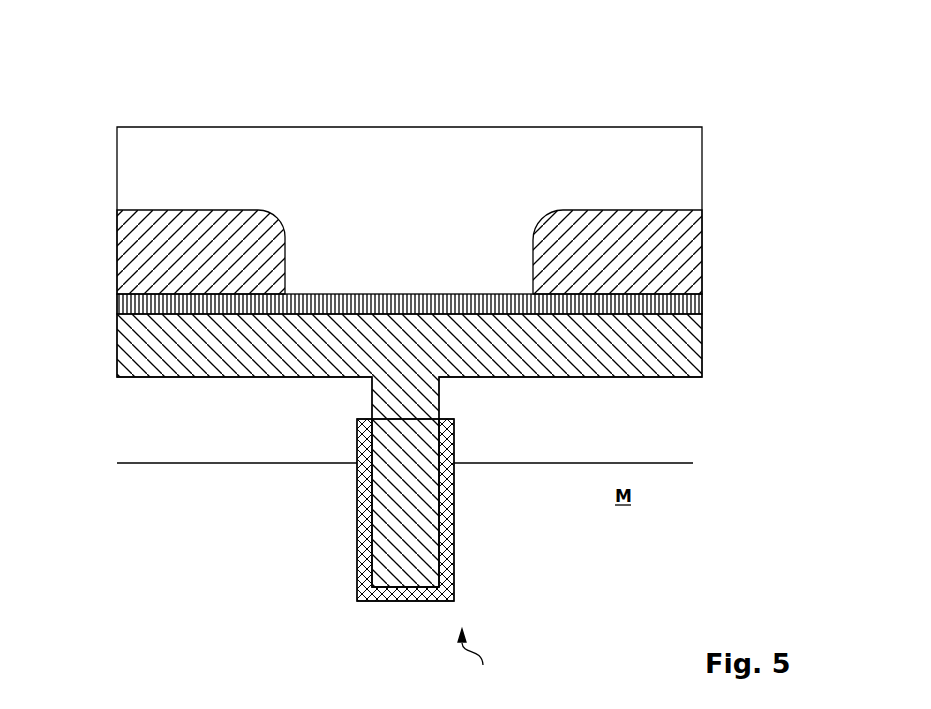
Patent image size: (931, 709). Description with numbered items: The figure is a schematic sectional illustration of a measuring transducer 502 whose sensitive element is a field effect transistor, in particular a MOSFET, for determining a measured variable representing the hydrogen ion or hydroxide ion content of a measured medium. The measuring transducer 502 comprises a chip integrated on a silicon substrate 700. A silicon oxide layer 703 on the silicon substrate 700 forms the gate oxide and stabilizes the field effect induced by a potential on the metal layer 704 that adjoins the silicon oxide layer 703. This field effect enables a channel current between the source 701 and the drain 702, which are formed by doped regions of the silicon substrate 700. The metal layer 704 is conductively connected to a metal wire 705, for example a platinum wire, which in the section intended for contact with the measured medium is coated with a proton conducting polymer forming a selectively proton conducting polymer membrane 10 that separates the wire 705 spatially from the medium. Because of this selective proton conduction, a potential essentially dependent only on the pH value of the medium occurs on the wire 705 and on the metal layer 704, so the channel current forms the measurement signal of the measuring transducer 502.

The silicon substrate 700 is at (372, 148).
The source 701 is at (682, 238).
The drain 702 is at (128, 259).
The silicon oxide layer 703 is at (121, 315).
The metal layer 704 is at (702, 340).
The metal wire 705 is at (440, 537).
The polymer membrane 10 is at (357, 557).
The measuring transducer 502 is at (479, 660).